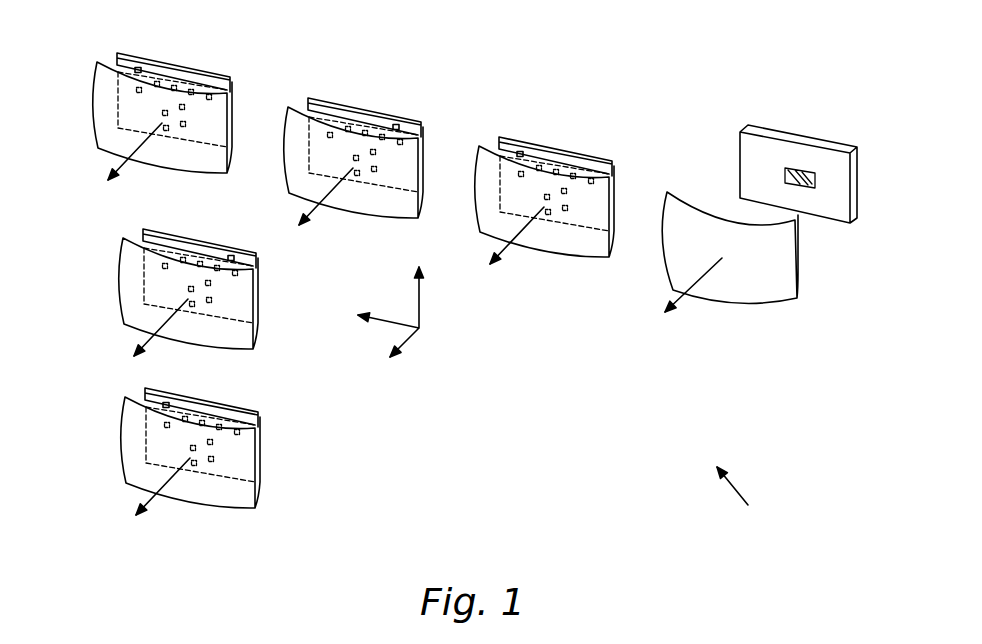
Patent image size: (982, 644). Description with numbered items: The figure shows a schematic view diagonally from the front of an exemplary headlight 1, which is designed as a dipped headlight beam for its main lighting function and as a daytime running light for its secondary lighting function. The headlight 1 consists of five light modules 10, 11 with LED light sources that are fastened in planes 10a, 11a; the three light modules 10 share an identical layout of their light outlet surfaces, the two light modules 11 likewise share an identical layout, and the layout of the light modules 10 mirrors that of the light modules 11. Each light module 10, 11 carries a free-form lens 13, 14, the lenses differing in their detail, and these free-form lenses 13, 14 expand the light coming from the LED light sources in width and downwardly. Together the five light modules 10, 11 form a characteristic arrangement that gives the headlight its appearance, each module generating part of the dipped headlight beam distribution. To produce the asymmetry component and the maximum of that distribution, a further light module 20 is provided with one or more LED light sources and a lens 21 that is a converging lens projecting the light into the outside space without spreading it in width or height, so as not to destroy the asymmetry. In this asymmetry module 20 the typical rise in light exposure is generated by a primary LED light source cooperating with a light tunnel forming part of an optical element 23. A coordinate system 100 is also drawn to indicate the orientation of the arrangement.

The headlight 1 is at (740, 495).
The light module 10 is at (190, 43).
The plane 10a is at (220, 68).
The light module 11 is at (422, 87).
The plane 11a is at (358, 105).
The free-form lens 13 is at (102, 135).
The free-form lens 14 is at (363, 202).
The light module 20 is at (830, 122).
The lens 21 is at (748, 287).
The optical element 23 is at (758, 158).
The coordinate system 100 is at (412, 337).